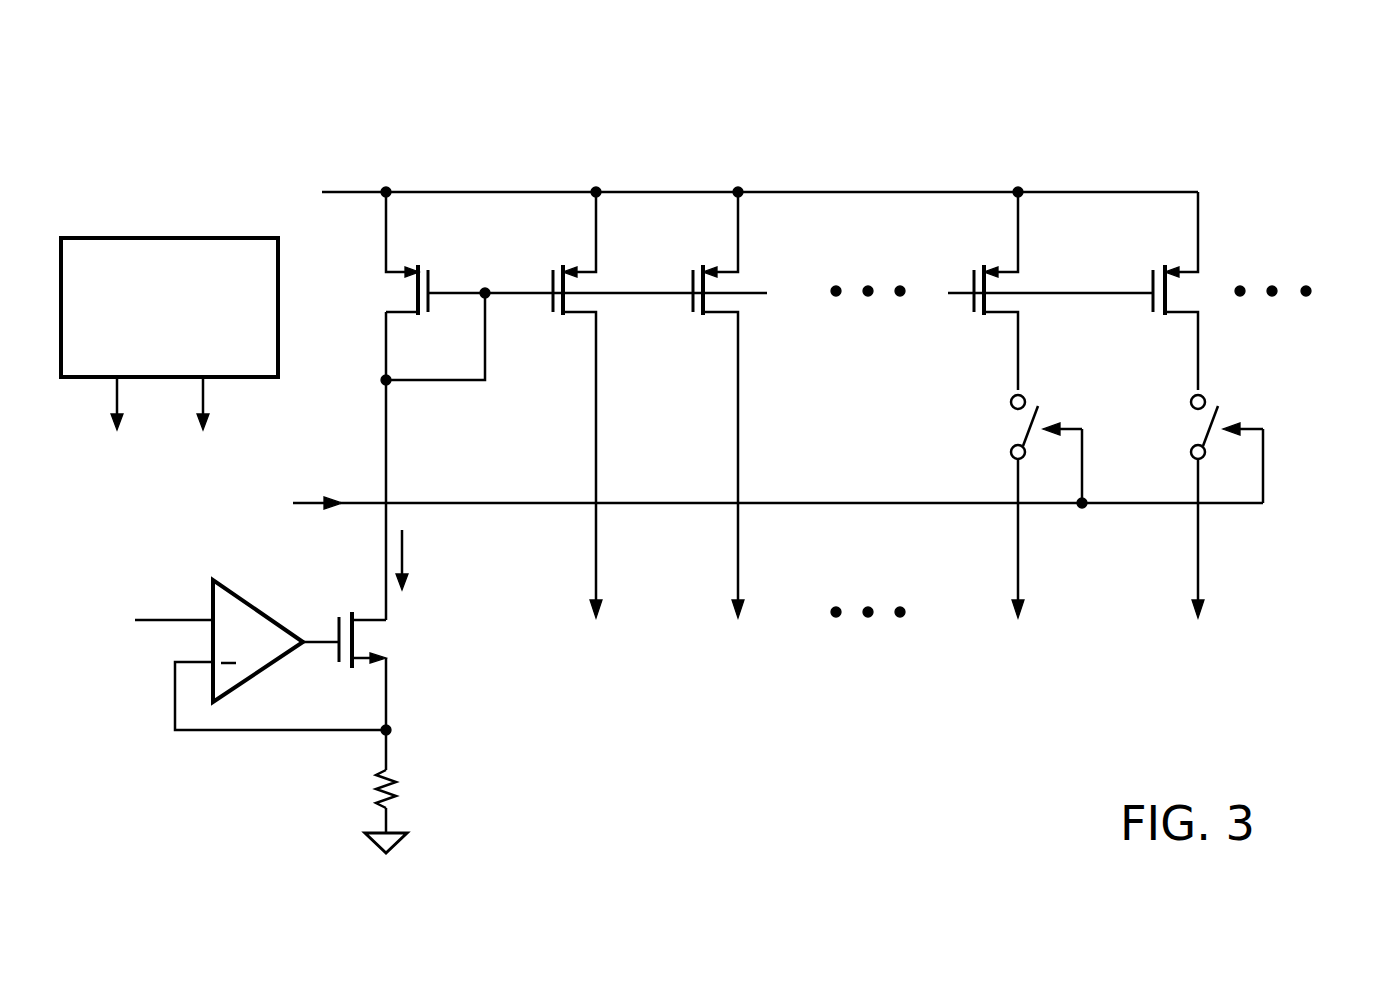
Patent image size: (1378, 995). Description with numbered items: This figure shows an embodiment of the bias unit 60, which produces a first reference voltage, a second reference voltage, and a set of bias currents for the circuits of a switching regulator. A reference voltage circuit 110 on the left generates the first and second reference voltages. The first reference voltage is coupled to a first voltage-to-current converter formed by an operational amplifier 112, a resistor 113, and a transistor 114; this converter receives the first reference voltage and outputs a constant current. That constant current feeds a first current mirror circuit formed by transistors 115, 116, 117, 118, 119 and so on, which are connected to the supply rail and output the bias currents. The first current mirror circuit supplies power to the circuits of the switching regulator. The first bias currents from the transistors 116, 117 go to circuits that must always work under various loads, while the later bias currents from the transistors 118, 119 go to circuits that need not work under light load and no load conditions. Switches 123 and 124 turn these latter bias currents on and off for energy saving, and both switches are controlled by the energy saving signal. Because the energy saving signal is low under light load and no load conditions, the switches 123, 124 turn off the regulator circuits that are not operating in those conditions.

The bias unit 60 is at (1362, 78).
The reference voltage circuit 110 is at (152, 232).
The operational amplifier 112 is at (268, 612).
The resistor 113 is at (403, 790).
The transistor 114 is at (392, 641).
The transistor 115 is at (427, 263).
The transistor 116 is at (602, 263).
The transistor 117 is at (748, 263).
The transistor 118 is at (1028, 263).
The transistor 119 is at (1210, 263).
The switch 123 is at (1010, 428).
The switch 124 is at (1191, 428).